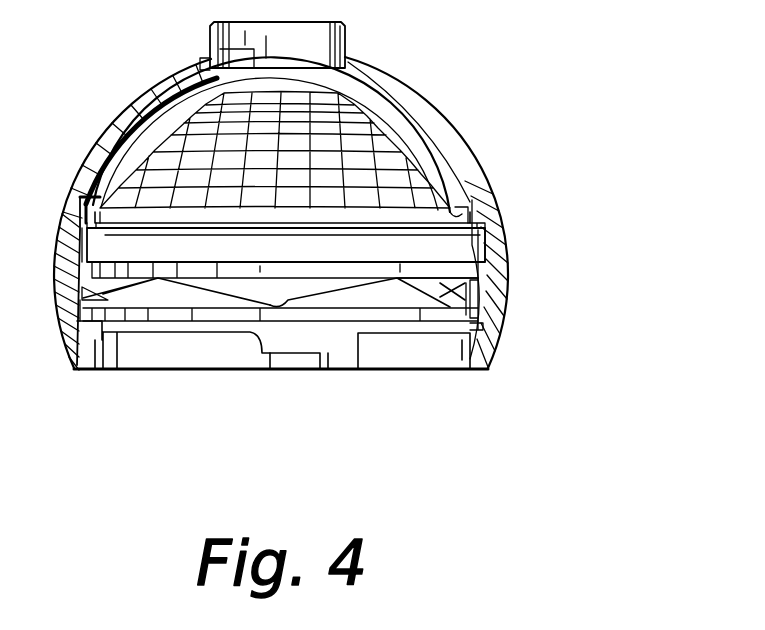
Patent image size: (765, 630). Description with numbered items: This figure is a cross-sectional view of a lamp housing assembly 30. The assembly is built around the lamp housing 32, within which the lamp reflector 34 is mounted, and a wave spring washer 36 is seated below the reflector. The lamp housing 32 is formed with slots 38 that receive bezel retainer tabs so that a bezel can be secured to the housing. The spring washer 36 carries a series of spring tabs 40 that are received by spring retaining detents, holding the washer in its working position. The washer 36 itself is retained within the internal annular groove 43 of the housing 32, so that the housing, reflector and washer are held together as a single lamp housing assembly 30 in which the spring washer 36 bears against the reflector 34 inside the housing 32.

The lamp housing assembly 30 is at (457, 110).
The lamp housing 32 is at (480, 170).
The lamp reflector 34 is at (160, 143).
The wave spring washer 36 is at (483, 267).
The slot 38 is at (308, 338).
The spring tab 40 is at (270, 308).
The internal annular groove 43 is at (153, 293).